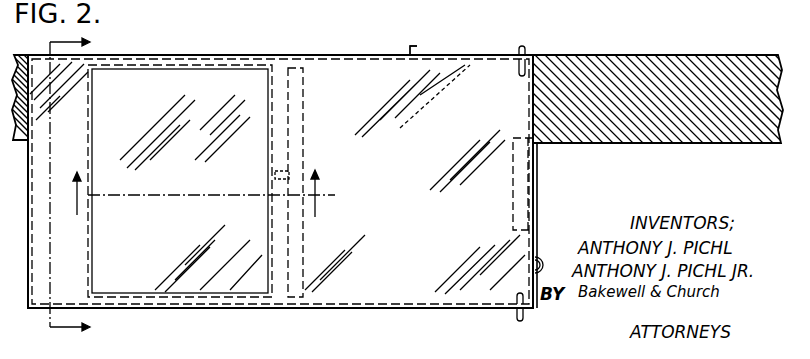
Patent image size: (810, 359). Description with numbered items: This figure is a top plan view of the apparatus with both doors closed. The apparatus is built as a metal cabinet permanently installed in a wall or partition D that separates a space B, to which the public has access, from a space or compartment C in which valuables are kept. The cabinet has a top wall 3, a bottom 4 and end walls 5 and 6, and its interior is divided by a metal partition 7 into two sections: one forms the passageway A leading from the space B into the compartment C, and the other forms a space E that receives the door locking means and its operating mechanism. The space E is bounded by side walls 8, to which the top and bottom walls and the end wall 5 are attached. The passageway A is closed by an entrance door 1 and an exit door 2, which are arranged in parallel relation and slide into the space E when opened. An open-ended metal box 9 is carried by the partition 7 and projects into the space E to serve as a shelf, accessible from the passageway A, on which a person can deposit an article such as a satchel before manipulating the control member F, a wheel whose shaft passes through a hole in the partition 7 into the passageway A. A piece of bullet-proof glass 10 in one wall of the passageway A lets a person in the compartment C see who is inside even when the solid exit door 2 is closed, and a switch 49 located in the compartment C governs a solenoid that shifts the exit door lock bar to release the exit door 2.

The entrance door 1 is at (417, 54).
The exit door 2 is at (187, 304).
The top wall 3 is at (300, 44).
The bottom 4 is at (53, 186).
The end wall 5 is at (28, 200).
The end wall 6 is at (538, 251).
The metal partition 7 is at (283, 173).
The side walls 8 is at (190, 56).
The open-ended metal box 9 is at (88, 160).
The bullet-proof glass 10 is at (523, 193).
The switch 49 is at (545, 263).
The passageway A is at (426, 200).
The space B is at (376, 36).
The space or compartment C is at (352, 340).
The wall or partition D is at (630, 70).
The space E is at (163, 97).
The control member F is at (300, 137).